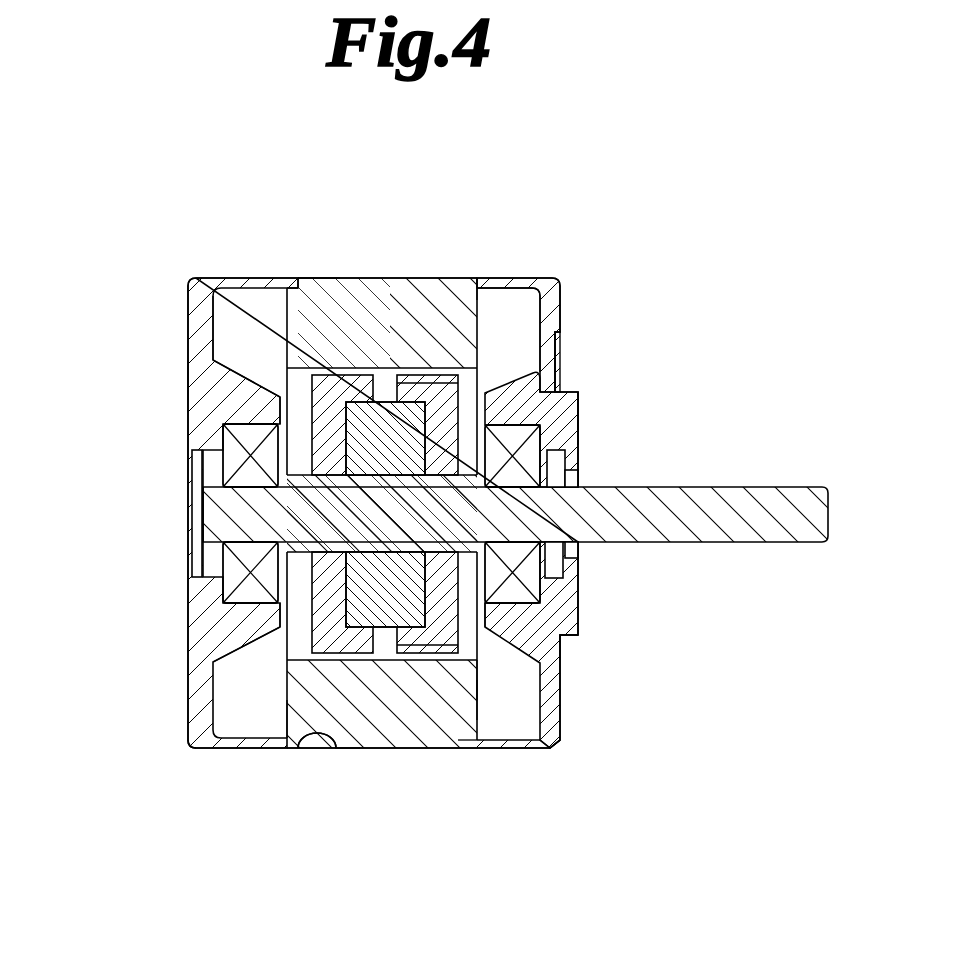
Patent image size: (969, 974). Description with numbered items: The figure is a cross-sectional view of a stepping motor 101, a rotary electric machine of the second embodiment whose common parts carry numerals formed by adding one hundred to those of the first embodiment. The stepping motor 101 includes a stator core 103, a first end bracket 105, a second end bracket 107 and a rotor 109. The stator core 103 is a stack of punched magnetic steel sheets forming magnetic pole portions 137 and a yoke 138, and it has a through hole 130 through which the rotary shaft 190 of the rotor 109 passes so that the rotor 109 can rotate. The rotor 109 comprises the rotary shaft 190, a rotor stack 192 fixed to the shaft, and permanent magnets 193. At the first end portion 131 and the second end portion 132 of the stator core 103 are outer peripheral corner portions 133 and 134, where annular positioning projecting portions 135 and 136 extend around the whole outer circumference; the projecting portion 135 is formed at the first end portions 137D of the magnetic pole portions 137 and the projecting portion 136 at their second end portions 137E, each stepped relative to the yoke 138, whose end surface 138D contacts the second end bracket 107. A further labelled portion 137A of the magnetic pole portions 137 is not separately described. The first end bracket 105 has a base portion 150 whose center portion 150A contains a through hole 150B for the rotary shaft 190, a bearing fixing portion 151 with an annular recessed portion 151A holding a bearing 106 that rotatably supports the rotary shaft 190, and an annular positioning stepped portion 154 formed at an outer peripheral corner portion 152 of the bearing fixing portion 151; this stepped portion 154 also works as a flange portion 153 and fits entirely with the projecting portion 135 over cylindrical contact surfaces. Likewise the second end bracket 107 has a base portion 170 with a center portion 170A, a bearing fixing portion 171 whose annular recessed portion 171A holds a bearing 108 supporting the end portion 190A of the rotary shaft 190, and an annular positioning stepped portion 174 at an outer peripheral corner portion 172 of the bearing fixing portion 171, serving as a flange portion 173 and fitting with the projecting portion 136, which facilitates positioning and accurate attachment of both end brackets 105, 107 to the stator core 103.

The stepping motor 101 is at (590, 273).
The stator core 103 is at (348, 282).
The first end bracket 105 is at (580, 410).
The bearing 106 is at (538, 605).
The second end bracket 107 is at (188, 345).
The bearing 108 is at (225, 595).
The rotor 109 is at (298, 385).
The through hole 130 is at (487, 625).
The first end portion 131 is at (458, 735).
The second end portion 132 is at (312, 745).
The outer peripheral corner portion 133 is at (480, 700).
The outer peripheral corner portion 134 is at (332, 750).
The annular positioning projecting portion 135 is at (478, 697).
The annular positioning projecting portion 136 is at (283, 690).
The magnetic pole portions 137 is at (390, 310).
The housing top portion 137A is at (462, 290).
The first end portions 137D is at (462, 332).
The second end portions 137E is at (297, 337).
The yoke 138 is at (425, 285).
The end surface 138D is at (307, 278).
The base portion 150 is at (560, 683).
The center portion 150A is at (560, 647).
The through hole 150B is at (578, 480).
The bearing fixing portion 151 is at (507, 380).
The annular recessed portion 151A is at (577, 425).
The outer peripheral corner portion 152 is at (550, 748).
The flange portion 153 is at (563, 745).
The annular positioning stepped portion 154 is at (522, 750).
The base portion 170 is at (195, 641).
The center portion 170A is at (188, 373).
The bearing fixing portion 171 is at (242, 655).
The annular recessed portion 171A is at (240, 420).
The outer peripheral corner portion 172 is at (187, 753).
The flange portion 173 is at (317, 740).
The annular positioning stepped portion 174 is at (262, 748).
The rotary shaft 190 is at (750, 485).
The end portion 190A is at (228, 515).
The rotor stack 192 is at (342, 655).
The permanent magnets 193 is at (387, 627).